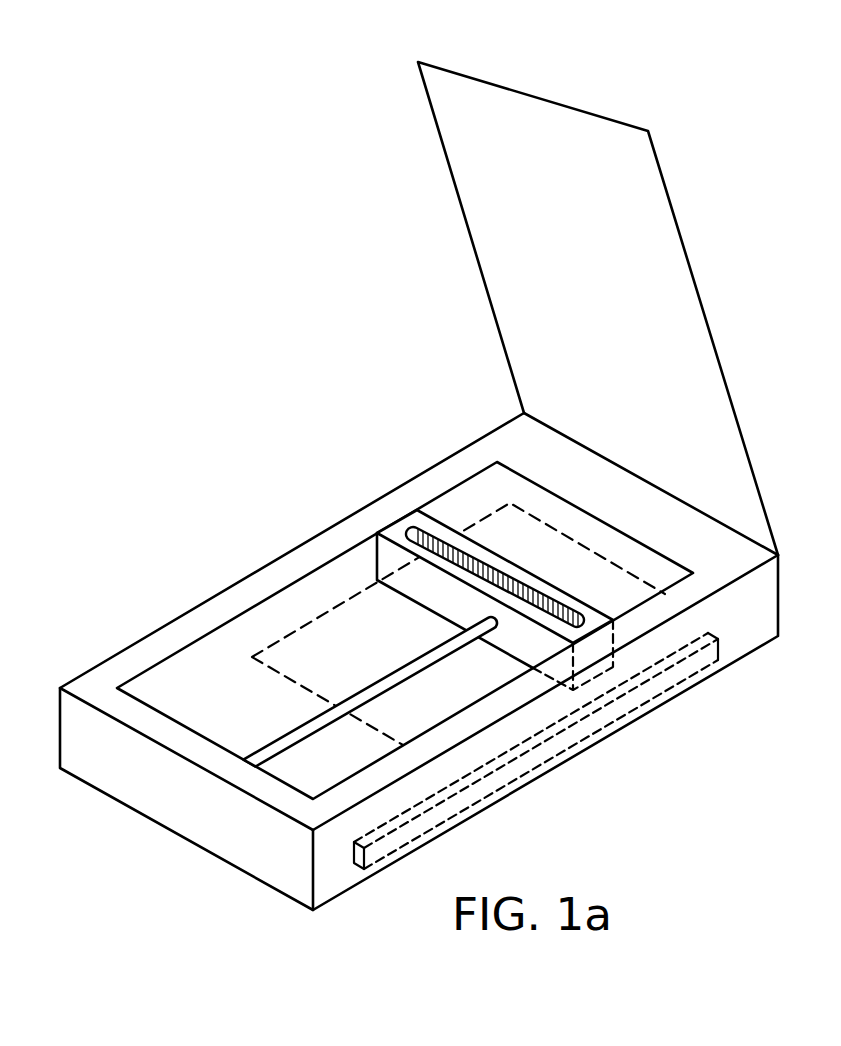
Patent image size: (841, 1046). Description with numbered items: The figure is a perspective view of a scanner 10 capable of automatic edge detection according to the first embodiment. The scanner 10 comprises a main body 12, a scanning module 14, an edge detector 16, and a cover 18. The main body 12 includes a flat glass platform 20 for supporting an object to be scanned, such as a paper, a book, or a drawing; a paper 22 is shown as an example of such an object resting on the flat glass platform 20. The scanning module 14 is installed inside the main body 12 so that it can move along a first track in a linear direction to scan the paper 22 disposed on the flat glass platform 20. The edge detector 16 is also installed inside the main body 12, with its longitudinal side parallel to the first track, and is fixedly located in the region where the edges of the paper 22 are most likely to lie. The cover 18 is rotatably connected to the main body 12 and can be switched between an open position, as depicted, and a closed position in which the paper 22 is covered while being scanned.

The scanner 10 is at (738, 334).
The main body 12 is at (300, 560).
The scanning module 14 is at (417, 526).
The edge detector 16 is at (603, 715).
The cover 18 is at (733, 400).
The flat glass platform 20 is at (188, 678).
The paper 22 is at (272, 642).